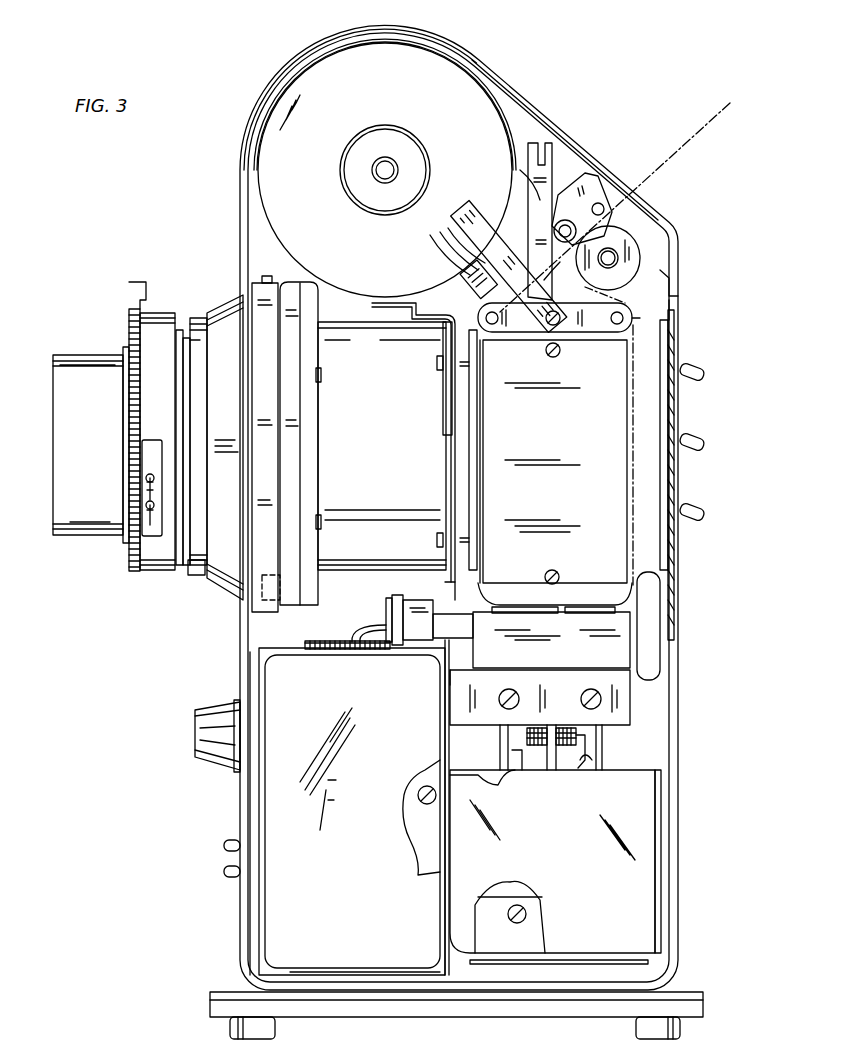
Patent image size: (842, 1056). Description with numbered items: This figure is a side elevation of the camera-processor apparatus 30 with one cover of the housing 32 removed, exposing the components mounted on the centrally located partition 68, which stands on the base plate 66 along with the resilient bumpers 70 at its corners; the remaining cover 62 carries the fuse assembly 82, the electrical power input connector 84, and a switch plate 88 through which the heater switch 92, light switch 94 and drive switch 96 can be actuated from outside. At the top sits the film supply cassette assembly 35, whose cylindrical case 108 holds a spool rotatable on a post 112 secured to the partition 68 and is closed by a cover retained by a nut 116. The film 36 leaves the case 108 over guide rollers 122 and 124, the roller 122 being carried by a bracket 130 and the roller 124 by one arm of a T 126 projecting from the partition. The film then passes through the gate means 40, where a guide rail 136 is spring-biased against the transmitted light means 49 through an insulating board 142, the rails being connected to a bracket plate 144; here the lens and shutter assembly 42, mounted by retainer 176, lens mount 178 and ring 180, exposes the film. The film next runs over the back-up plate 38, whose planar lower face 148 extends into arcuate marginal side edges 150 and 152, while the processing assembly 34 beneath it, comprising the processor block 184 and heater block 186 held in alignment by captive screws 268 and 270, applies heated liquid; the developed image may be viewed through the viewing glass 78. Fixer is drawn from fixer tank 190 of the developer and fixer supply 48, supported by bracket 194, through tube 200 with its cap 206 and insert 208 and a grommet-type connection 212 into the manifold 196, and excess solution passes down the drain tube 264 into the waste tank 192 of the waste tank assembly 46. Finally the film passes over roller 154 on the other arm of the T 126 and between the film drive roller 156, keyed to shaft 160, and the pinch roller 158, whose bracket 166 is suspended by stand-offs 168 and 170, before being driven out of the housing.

The camera-processor apparatus 30 is at (222, 68).
The housing 32 is at (338, 38).
The processing assembly 34 is at (634, 692).
The film supply cassette assembly 35 is at (376, 58).
The film 36 is at (692, 150).
The back-up plate 38 is at (602, 600).
The gate means 40 is at (463, 345).
The lens and shutter assembly 42 is at (117, 311).
The waste tank assembly 46 is at (657, 820).
The developer and fixer supply 48 is at (274, 693).
The transmitted light means 49 is at (626, 407).
The cover 62 is at (242, 183).
The base plate 66 is at (352, 1008).
The partition 68 is at (669, 278).
The resilient bumpers 70 is at (278, 1028).
The viewing glass 78 is at (665, 474).
The fuse assembly 82 is at (196, 762).
The electrical power input connector 84 is at (226, 846).
The switch plate 88 is at (686, 343).
The heater switch 92 is at (705, 373).
The light switch 94 is at (705, 443).
The drive switch 96 is at (706, 513).
The cylindrical case 108 is at (512, 100).
The post 112 is at (385, 170).
The nut 116 is at (398, 124).
The guide roller 122 is at (503, 240).
The guide roller 124 is at (478, 297).
The T 126 is at (528, 333).
The bracket 130 is at (468, 286).
The guide rail 136 is at (471, 452).
The insulating board 142 is at (474, 393).
The bracket plate 144 is at (411, 441).
The lower face 148 is at (534, 463).
The arcuate marginal side edge 150 is at (480, 596).
The arcuate marginal side edge 152 is at (642, 592).
The roller 154 is at (640, 318).
The film drive roller 156 is at (660, 255).
The pinch roller 158 is at (590, 190).
The shaft 160 is at (612, 258).
The bracket 166 is at (556, 168).
The stand-off 168 is at (528, 195).
The stand-off 170 is at (564, 268).
The retainer 176 is at (305, 298).
The lens mount 178 is at (245, 300).
The ring 180 is at (196, 575).
The processor block 184 is at (620, 650).
The heater block 186 is at (628, 685).
The fixer tank 190 is at (268, 940).
The waste tank 192 is at (662, 856).
The bracket 194 is at (450, 975).
The manifold 196 is at (418, 628).
The tube 200 is at (350, 624).
The cap 206 is at (306, 641).
The insert 208 is at (328, 650).
The grommet-type connection 212 is at (395, 606).
The drain tube 264 is at (566, 770).
The captive screw 268 is at (580, 735).
The captive screw 270 is at (580, 750).